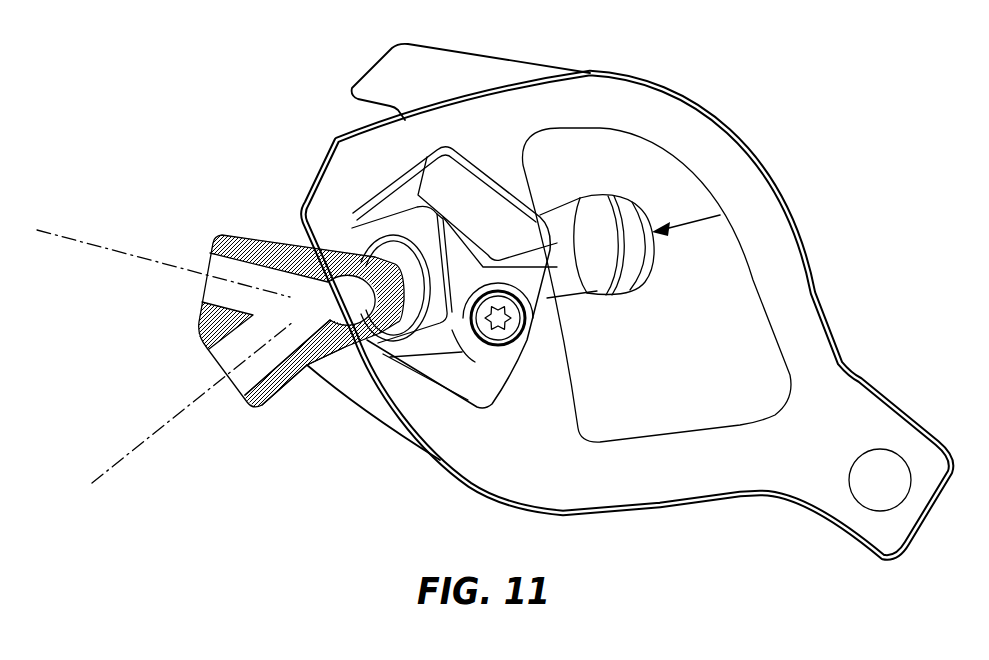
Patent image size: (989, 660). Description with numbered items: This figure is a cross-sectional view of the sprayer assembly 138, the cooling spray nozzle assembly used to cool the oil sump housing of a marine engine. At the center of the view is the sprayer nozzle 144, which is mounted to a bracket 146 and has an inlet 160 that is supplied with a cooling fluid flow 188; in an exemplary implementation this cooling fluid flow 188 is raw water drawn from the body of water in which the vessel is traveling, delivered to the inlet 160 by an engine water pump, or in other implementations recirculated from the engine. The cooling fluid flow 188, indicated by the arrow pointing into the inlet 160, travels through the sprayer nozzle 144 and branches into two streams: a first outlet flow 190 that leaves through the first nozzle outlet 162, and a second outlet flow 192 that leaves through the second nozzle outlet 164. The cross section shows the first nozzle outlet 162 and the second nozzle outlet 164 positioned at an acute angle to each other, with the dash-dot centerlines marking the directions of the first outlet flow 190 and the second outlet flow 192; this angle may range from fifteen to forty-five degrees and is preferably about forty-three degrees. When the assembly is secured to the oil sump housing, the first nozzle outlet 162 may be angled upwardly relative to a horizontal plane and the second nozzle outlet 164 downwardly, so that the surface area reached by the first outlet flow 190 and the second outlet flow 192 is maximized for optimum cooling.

The sprayer assembly 138 is at (197, 95).
The sprayer nozzle 144 is at (272, 220).
The bracket 146 is at (827, 318).
The inlet 160 is at (656, 256).
The first nozzle outlet 162 is at (210, 257).
The second nozzle outlet 164 is at (237, 386).
The cooling fluid flow 188 is at (697, 217).
The first outlet flow 190 is at (96, 246).
The second outlet flow 192 is at (140, 446).